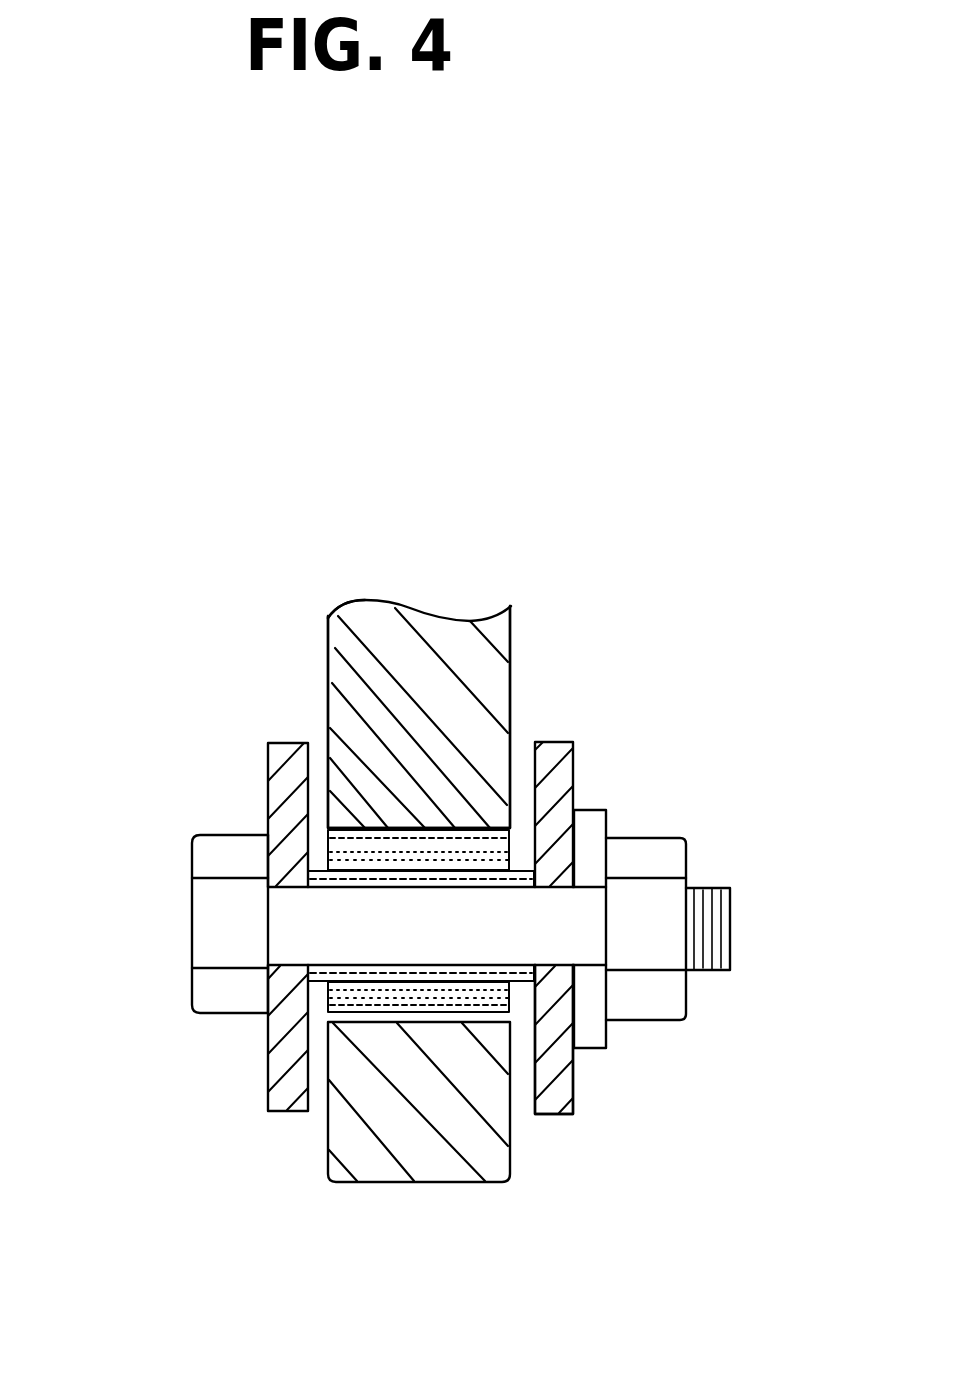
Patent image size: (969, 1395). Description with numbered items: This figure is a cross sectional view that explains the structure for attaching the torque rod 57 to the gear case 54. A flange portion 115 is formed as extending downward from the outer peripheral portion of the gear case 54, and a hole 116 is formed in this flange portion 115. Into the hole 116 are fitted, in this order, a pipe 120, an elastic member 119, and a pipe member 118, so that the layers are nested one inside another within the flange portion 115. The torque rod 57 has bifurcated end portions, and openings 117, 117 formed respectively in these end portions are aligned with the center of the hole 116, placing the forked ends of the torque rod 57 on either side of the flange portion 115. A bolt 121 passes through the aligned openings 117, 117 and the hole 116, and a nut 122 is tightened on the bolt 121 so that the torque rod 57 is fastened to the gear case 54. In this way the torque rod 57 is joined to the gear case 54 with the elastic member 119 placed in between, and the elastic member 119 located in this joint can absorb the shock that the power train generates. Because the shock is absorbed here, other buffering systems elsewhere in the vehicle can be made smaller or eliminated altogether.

The gear case 54 is at (520, 630).
The torque rod 57 is at (555, 1117).
The flange portion 115 is at (455, 684).
The hole 116 is at (465, 1030).
The openings 117 is at (292, 1017).
The pipe member 118 is at (330, 712).
The elastic member 119 is at (352, 805).
The pipe 120 is at (328, 618).
The bolt 121 is at (217, 920).
The nut 122 is at (655, 852).